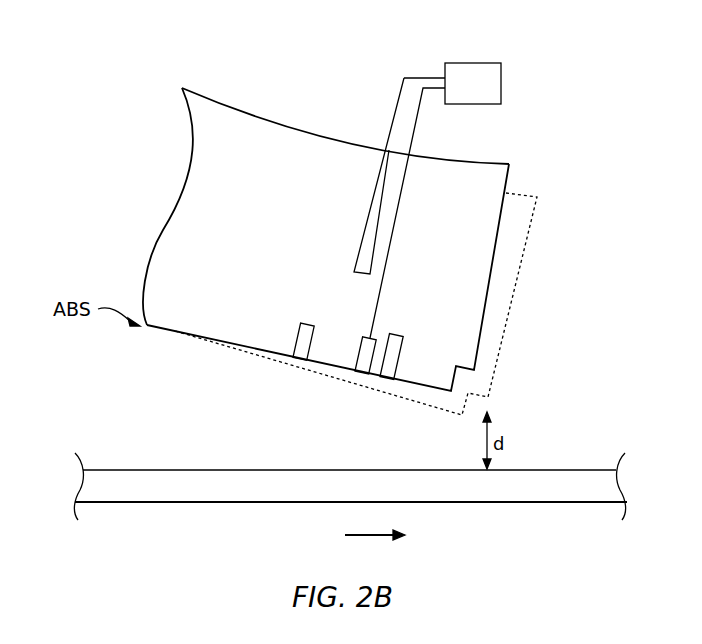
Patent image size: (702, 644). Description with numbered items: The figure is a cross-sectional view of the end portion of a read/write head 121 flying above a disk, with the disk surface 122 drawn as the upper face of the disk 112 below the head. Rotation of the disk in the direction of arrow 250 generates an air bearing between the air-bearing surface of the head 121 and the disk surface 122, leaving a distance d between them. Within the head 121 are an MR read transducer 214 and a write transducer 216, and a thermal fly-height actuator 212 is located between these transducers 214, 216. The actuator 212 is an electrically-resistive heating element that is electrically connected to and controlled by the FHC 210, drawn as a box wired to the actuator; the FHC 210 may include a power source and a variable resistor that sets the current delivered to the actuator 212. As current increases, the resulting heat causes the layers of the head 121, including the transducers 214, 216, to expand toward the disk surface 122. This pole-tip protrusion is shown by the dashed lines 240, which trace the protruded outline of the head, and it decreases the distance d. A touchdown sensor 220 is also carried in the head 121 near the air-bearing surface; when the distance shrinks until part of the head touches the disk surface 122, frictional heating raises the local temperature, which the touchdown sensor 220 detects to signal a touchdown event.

The read/write head 121 is at (275, 225).
The FHC 210 is at (501, 83).
The thermal fly-height actuator 212 is at (383, 171).
The MR read transducer 214 is at (298, 353).
The write transducer 216 is at (388, 372).
The touchdown sensor 220 is at (362, 370).
The dashed lines 240 is at (517, 270).
The disk surface 122 is at (548, 470).
The disk 112 is at (548, 494).
The arrow 250 is at (367, 535).